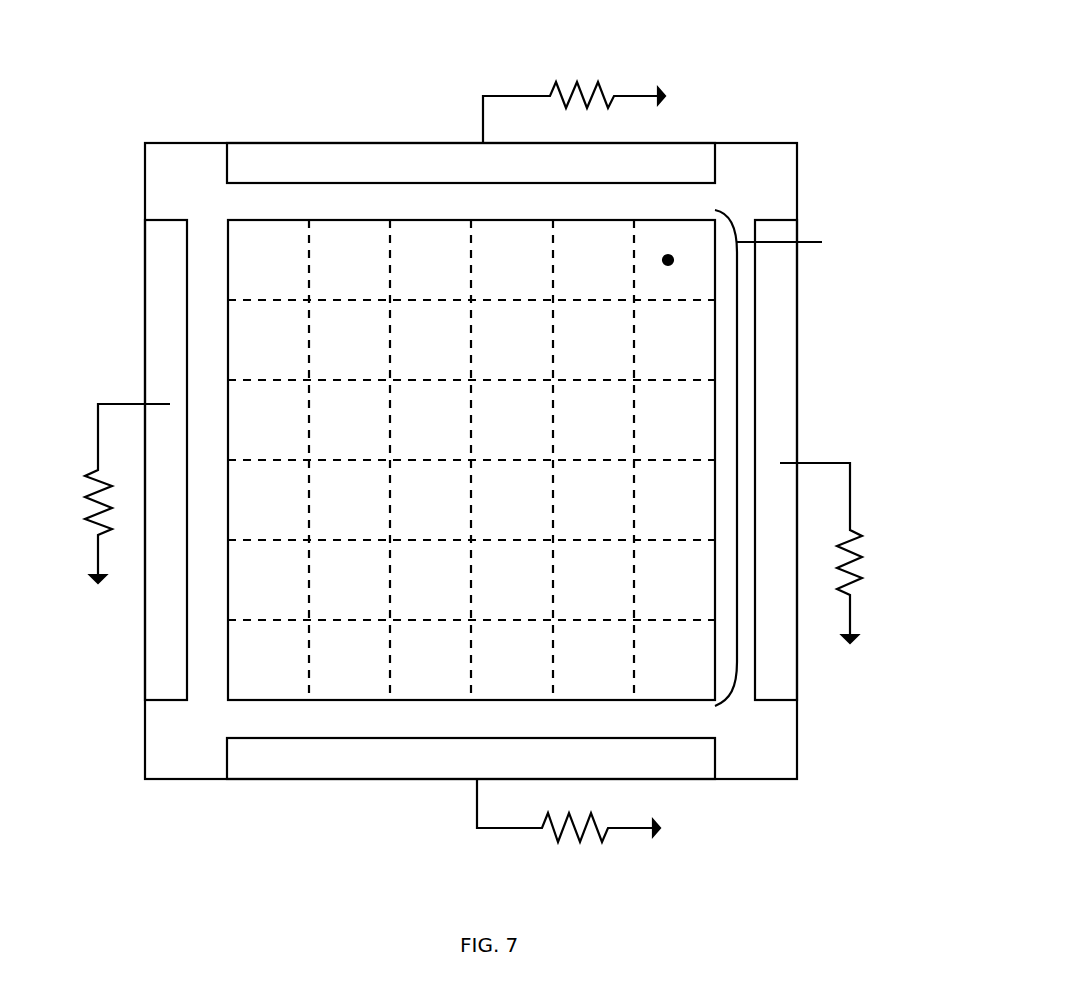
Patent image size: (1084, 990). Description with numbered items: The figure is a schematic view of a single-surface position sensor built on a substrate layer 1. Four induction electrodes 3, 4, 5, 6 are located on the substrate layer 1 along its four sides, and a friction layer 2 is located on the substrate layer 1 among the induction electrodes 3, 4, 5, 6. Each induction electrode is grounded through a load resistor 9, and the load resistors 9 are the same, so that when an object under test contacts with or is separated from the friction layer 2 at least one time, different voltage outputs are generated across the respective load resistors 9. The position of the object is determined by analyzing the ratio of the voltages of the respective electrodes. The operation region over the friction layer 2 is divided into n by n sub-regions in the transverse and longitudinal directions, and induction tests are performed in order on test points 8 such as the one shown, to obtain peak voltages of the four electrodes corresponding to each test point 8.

The substrate layer 1 is at (763, 733).
The friction layer 2 is at (262, 247).
The induction electrode 3 is at (640, 148).
The induction electrode 4 is at (168, 380).
The induction electrode 5 is at (252, 757).
The induction electrode 6 is at (790, 388).
The test point 8 is at (668, 260).
The load resistor 9 is at (575, 72).